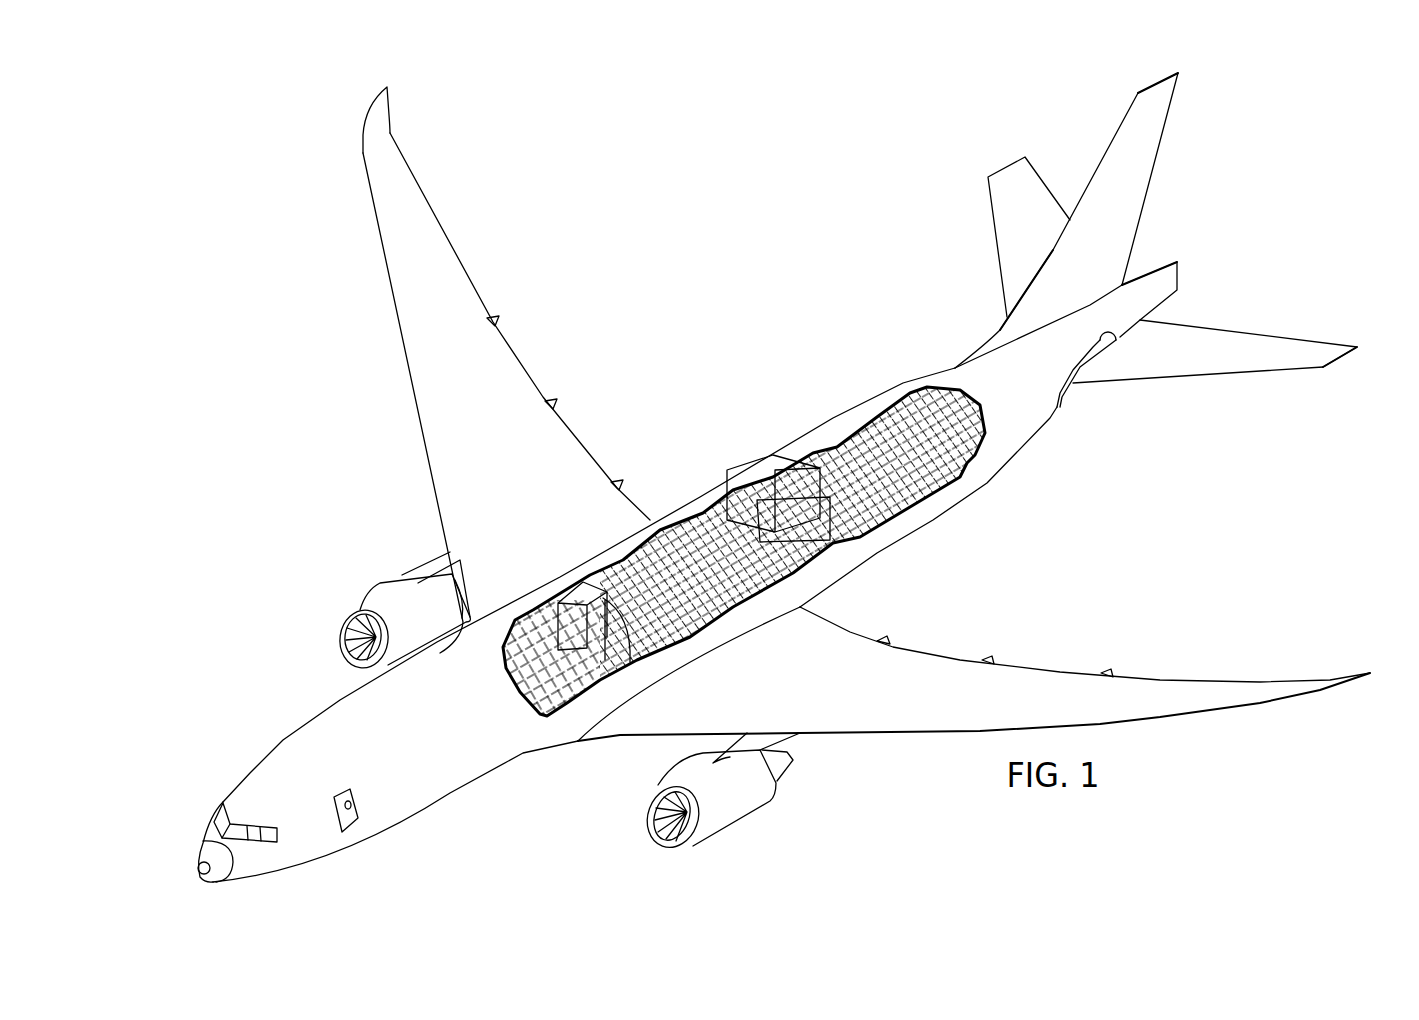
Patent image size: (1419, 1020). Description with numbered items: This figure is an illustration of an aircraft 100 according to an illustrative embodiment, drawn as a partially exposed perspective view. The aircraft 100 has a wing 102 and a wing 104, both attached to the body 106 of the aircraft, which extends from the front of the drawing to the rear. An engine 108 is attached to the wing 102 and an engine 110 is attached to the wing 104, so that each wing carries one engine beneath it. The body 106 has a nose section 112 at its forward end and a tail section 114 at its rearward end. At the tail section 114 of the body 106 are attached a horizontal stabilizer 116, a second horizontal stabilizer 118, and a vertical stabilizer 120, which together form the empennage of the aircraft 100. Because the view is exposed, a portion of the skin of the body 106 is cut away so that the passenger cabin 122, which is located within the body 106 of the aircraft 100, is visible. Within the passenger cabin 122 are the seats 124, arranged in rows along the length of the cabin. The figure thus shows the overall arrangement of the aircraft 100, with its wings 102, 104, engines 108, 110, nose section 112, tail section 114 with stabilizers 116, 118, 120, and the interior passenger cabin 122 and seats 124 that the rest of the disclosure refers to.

The aircraft 100 is at (743, 477).
The wing 102 is at (897, 735).
The wing 104 is at (396, 308).
The body 106 is at (683, 492).
The engine 108 is at (743, 823).
The engine 110 is at (386, 582).
The nose section 112 is at (191, 848).
The tail section 114 is at (1146, 240).
The horizontal stabilizer 116 is at (1250, 334).
The horizontal stabilizer 118 is at (999, 248).
The vertical stabilizer 120 is at (1149, 180).
The passenger cabin 122 is at (750, 550).
The seats 124 is at (900, 512).